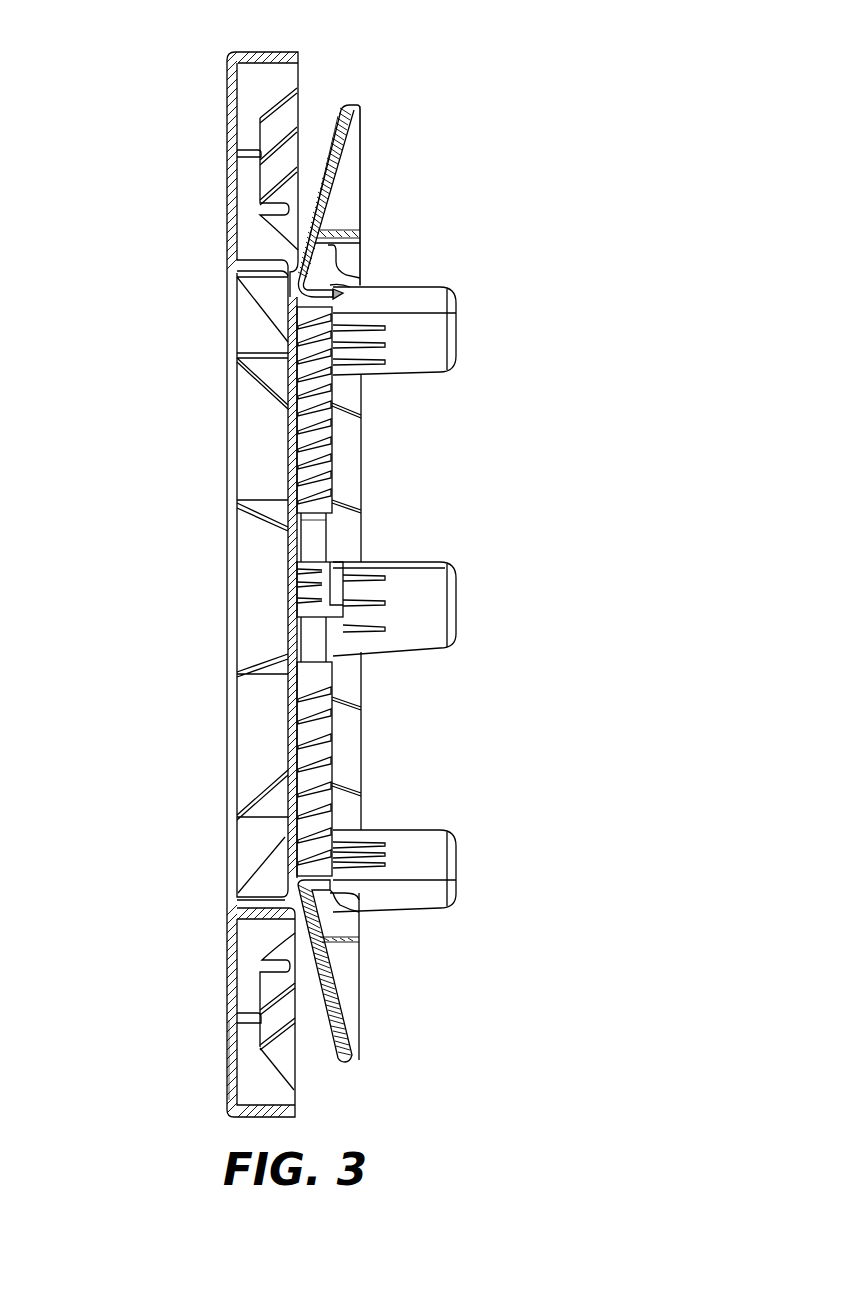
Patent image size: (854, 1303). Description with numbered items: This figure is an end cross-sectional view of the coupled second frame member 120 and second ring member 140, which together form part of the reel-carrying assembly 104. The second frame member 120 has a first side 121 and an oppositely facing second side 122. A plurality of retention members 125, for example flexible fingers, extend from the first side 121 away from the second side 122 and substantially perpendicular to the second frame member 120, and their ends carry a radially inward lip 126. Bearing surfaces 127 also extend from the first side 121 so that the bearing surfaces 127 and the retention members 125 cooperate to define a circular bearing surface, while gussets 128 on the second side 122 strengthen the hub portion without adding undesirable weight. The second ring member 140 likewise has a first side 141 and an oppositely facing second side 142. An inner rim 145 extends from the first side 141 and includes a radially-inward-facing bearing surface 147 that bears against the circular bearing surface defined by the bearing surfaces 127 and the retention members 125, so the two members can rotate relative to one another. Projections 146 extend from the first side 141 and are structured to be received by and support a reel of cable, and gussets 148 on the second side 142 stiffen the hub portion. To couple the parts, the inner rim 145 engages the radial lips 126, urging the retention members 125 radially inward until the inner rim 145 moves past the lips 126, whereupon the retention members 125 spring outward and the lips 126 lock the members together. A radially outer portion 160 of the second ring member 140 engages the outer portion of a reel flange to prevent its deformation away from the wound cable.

The connector assembly 104 is at (119, 138).
The second frame member 120 is at (248, 742).
The first side 121 is at (295, 1090).
The second side 122 is at (227, 990).
The retention members 125 is at (372, 845).
The radially inward lip 126 is at (460, 880).
The bearing surfaces 127 is at (323, 675).
The gussets 128 is at (258, 665).
The second ring member 140 is at (345, 112).
The first side 141 is at (361, 158).
The second side 142 is at (332, 153).
The inner rim 145 is at (308, 547).
The projections 146 is at (450, 602).
The radially-inward-facing bearing surface 147 is at (322, 533).
The gussets 148 is at (347, 500).
The radially outer portion 160 is at (360, 1058).